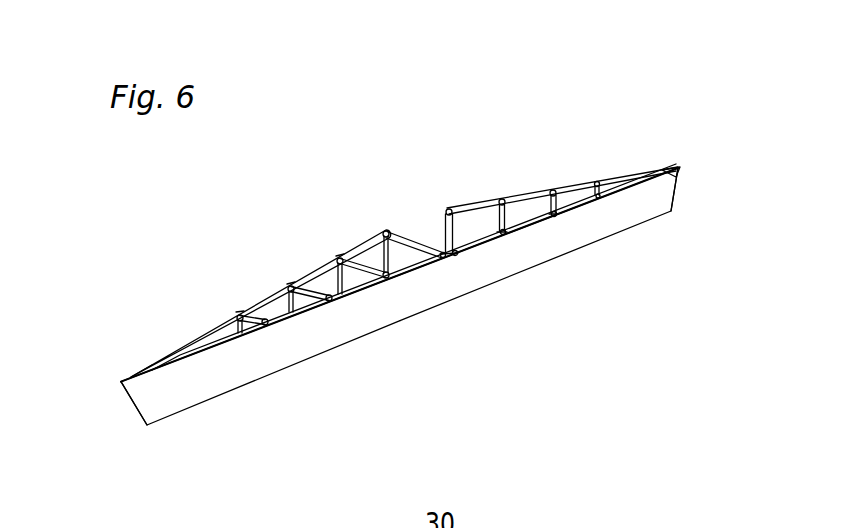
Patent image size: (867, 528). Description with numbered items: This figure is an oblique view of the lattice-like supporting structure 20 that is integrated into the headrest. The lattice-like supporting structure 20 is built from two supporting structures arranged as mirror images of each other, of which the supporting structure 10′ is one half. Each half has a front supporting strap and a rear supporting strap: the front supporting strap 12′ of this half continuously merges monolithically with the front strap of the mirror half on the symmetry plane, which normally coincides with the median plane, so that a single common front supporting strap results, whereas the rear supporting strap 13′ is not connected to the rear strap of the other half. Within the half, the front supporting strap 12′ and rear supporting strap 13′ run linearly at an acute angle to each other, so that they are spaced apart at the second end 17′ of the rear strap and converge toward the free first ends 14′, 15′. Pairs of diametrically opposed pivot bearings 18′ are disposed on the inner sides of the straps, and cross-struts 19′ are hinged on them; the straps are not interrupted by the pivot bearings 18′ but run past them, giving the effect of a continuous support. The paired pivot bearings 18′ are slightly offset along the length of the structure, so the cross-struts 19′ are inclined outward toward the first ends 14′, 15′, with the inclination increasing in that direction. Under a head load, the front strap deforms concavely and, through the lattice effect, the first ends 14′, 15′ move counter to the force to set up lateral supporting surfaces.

The lattice-like supporting structure 20 is at (382, 161).
The supporting structure 10′ is at (249, 284).
The front supporting strap 12′ is at (234, 384).
The rear supporting strap 13′ is at (200, 338).
The first end 14′ is at (142, 380).
The first end 15′ is at (136, 371).
The second end 17′ is at (389, 236).
The pivot bearing 18′ is at (338, 258).
The cross-strut 19′ is at (372, 288).